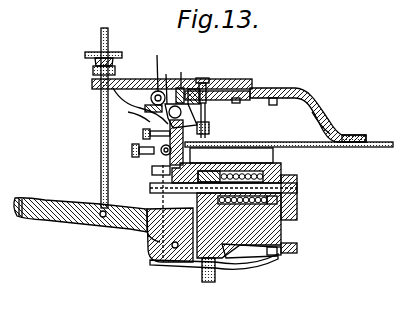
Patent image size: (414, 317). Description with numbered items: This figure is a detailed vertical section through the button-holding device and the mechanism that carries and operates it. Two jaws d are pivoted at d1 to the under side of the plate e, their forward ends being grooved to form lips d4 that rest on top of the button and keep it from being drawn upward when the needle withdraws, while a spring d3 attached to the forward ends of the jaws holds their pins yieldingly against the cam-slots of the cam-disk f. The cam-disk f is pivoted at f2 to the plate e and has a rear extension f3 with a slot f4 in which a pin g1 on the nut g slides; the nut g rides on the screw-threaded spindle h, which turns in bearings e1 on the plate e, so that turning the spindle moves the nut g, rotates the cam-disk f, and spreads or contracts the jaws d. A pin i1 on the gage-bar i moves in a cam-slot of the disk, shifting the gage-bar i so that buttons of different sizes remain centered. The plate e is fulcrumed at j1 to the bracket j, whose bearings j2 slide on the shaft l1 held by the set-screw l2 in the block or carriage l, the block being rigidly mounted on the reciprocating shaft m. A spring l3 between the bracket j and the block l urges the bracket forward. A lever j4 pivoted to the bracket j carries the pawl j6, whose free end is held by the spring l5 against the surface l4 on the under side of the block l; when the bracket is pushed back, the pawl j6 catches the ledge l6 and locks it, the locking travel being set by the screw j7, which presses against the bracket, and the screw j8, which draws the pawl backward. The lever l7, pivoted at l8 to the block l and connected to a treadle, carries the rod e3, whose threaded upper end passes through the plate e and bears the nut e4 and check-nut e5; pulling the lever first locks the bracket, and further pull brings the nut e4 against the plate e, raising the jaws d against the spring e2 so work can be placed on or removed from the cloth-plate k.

The plate e is at (148, 79).
The bearings e1 is at (168, 80).
The spring e2 is at (137, 106).
The rod e3 is at (101, 159).
The nut e4 is at (93, 71).
The check-nut e5 is at (92, 55).
The screw-threaded spindle h is at (154, 65).
The nut g is at (151, 98).
The pin g1 is at (166, 114).
The gage-bar i is at (326, 133).
The pin i1 is at (182, 71).
The cam-disk f is at (207, 107).
The pivot f2 is at (207, 78).
The extension f3 is at (129, 118).
The slot f4 is at (204, 120).
The bracket j is at (221, 142).
The fulcrum j1 is at (203, 118).
The bearings j2 is at (162, 173).
The lever j4 is at (150, 255).
The pawl j6 is at (273, 256).
The screw j7 is at (140, 154).
The screw j8 is at (152, 133).
The cloth-plate k is at (383, 148).
The jaws d is at (327, 125).
The pivots d1 is at (241, 102).
The spring d3 is at (273, 105).
The lips d4 is at (364, 138).
The block or carriage l is at (239, 225).
The shaft l1 is at (297, 190).
The set-screw l2 is at (150, 189).
The spring l3 is at (281, 173).
The surface l4 is at (292, 254).
The spring l5 is at (222, 272).
The ledge l6 is at (263, 268).
The lever l7 is at (63, 221).
The pivot l8 is at (147, 243).
The shaft m is at (249, 252).